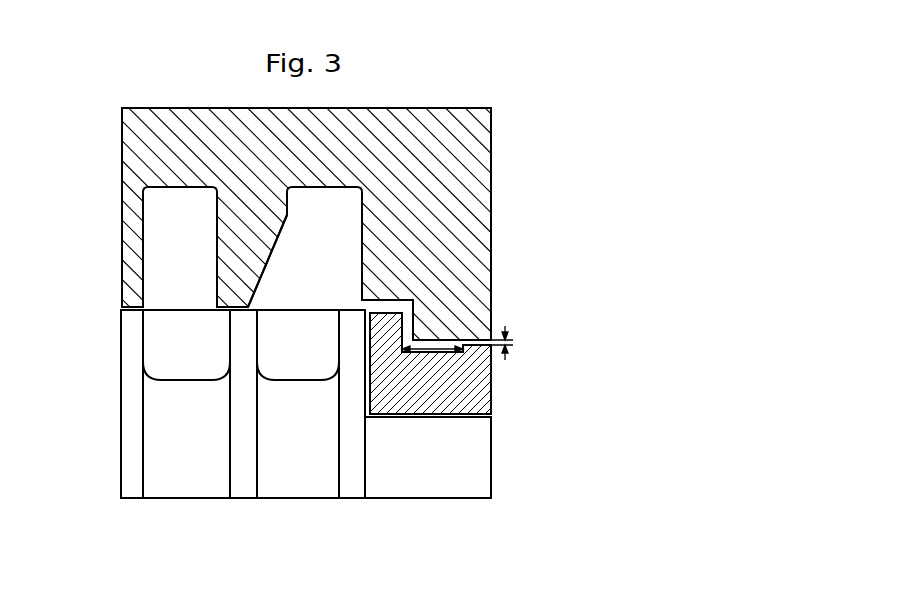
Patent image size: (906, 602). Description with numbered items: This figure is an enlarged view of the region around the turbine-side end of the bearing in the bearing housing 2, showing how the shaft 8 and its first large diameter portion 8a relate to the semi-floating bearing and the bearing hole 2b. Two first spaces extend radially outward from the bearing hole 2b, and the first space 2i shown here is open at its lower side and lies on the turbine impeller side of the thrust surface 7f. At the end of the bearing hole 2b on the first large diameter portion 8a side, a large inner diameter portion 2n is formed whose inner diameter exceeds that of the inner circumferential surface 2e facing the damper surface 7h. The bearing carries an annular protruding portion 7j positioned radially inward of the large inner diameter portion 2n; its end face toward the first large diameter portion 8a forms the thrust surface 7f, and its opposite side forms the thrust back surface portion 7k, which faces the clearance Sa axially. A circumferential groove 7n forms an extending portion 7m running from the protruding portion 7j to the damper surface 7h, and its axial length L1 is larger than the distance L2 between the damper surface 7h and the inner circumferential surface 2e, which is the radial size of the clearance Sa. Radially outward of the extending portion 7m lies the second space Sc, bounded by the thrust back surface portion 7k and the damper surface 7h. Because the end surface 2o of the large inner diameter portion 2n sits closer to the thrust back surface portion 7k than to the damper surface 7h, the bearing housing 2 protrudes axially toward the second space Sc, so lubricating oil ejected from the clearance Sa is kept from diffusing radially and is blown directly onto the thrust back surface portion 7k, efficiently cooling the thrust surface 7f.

The bearing housing 2 is at (122, 245).
The shaft 8 is at (121, 353).
The first space 2i is at (336, 229).
The protruding portion 7j is at (384, 304).
The large inner diameter portion 2n is at (413, 302).
The end surface 2o is at (420, 340).
The length of the extending portion L1 is at (450, 348).
The bearing hole 2b is at (442, 340).
The inner circumferential surface 2e is at (462, 340).
The second space Sc is at (478, 340).
The clearance Sa is at (486, 346).
The distance between the damper surface and the inner circumferential surface L2 is at (507, 349).
The damper surface 7h is at (485, 347).
The first large diameter portion 8a is at (349, 475).
The thrust surface 7f is at (367, 383).
The thrust back surface portion 7k is at (396, 357).
The extending portion 7m is at (441, 357).
The circumferential groove 7n is at (487, 358).